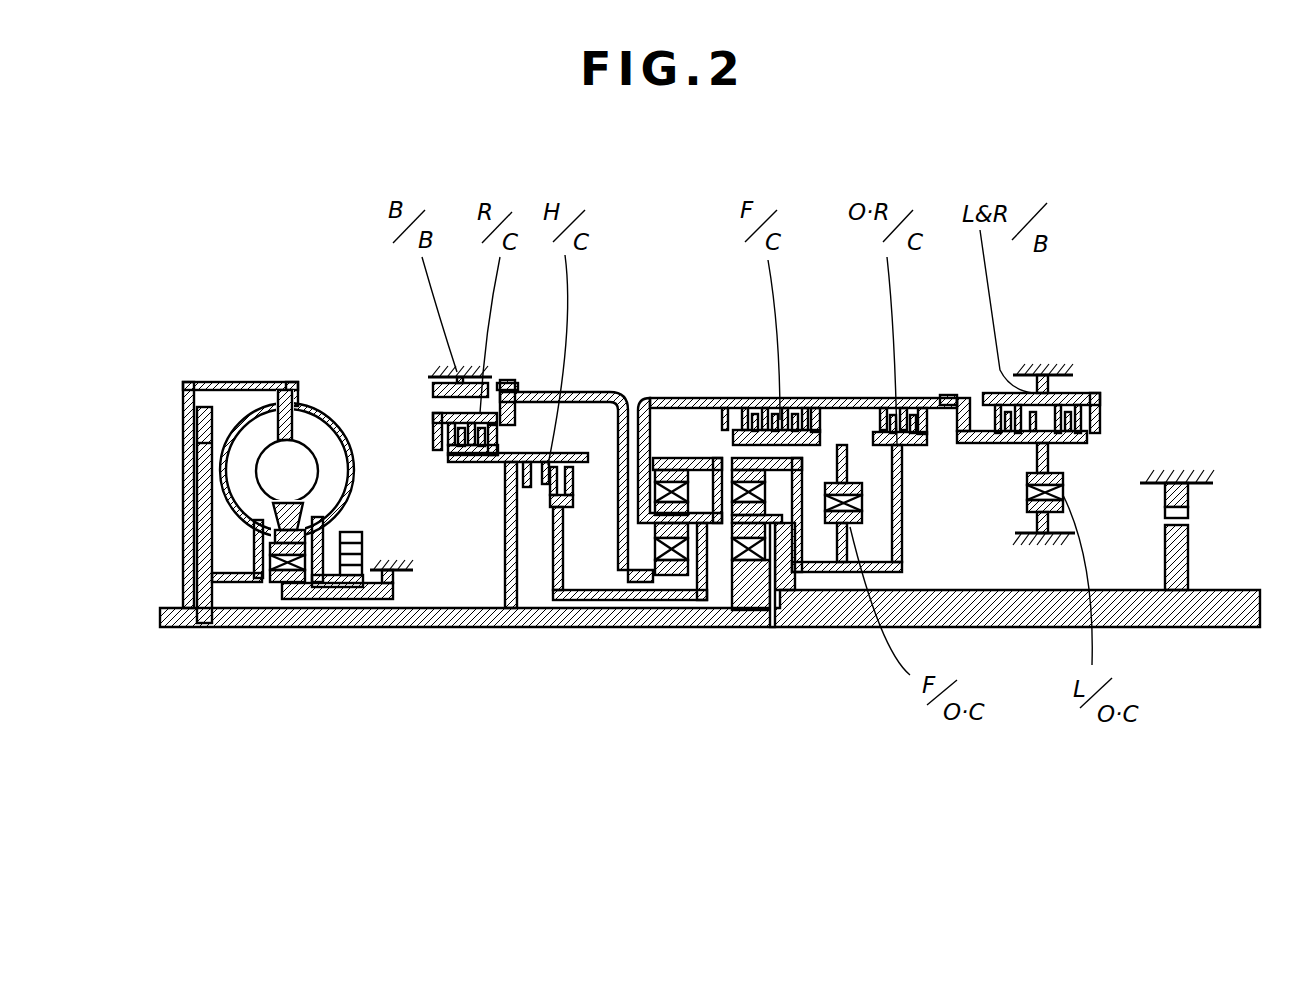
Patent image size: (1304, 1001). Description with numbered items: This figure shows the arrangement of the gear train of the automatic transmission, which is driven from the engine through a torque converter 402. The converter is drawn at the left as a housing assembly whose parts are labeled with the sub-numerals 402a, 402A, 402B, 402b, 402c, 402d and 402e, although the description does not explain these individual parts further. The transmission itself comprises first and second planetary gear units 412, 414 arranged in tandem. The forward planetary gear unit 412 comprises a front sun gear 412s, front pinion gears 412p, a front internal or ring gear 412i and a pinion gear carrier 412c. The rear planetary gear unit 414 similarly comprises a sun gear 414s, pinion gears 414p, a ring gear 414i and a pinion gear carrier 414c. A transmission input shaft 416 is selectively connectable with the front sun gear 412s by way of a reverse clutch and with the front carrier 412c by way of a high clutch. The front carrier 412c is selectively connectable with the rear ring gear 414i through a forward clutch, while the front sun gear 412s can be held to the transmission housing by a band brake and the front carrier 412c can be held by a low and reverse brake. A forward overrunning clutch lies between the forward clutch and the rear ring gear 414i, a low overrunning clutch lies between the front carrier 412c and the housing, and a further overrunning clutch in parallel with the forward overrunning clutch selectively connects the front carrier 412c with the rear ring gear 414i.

The torque converter 402 is at (226, 350).
The housing top wall 402a is at (198, 378).
The housing portion 402A is at (282, 378).
The housing side wall 402B is at (185, 502).
The ring member 402b is at (322, 432).
The inner member 402c is at (260, 425).
The output hub bearing 402d is at (308, 502).
The inner vertical plate 402e is at (207, 468).
The first planetary gear unit 412 is at (640, 542).
The front internal or ring gear 412i is at (668, 457).
The front pinion gears 412p is at (683, 540).
The front sun gear 412s is at (665, 578).
The pinion gear carrier 412c is at (716, 590).
The second planetary gear unit 414 is at (818, 470).
The ring gear 414i is at (735, 467).
The pinion gears 414p is at (777, 495).
The sun gear 414s is at (745, 580).
The pinion gear carrier 414c is at (758, 532).
The transmission input shaft 416 is at (428, 612).